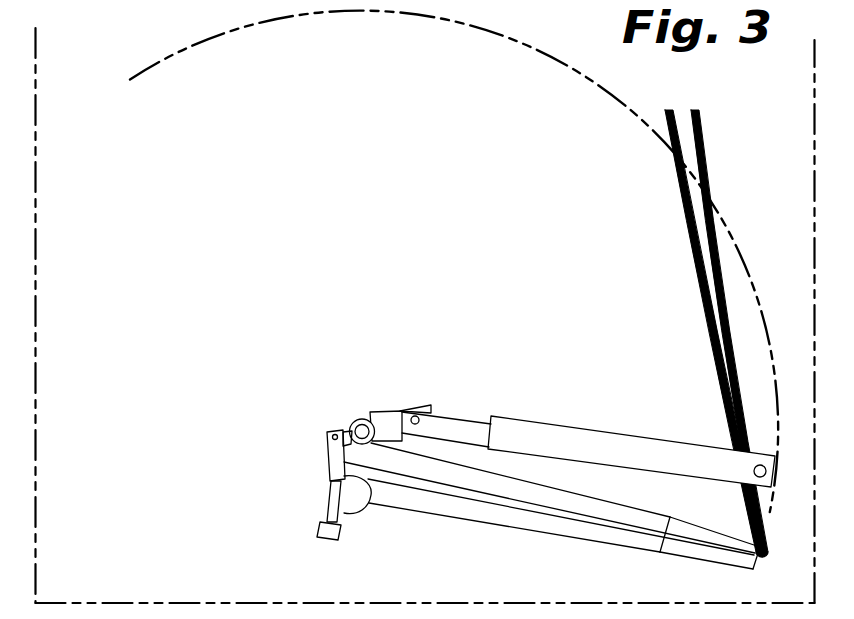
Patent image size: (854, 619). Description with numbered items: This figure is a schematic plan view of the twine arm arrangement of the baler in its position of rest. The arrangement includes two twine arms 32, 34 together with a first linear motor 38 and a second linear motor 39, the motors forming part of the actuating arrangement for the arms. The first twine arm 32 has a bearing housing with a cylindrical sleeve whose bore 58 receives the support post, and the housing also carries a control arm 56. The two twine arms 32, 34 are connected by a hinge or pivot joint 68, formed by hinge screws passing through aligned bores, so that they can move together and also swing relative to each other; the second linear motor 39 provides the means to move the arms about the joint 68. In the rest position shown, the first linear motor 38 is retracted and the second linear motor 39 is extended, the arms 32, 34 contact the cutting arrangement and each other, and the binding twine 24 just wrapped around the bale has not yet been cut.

The binding twine 24 is at (682, 216).
The twine arm 32 is at (612, 482).
The twine arm 34 is at (550, 538).
The first linear motor 38 is at (551, 426).
The second linear motor 39 is at (328, 461).
The control arm 56 is at (388, 411).
The bore of the sleeve 58 is at (358, 416).
The hinge or pivot joint 68 is at (356, 517).